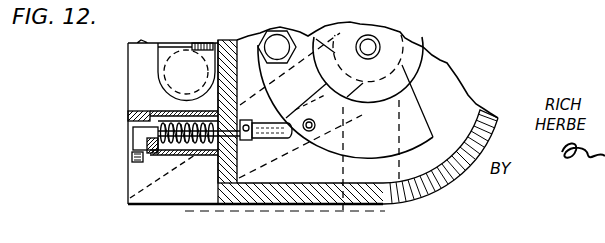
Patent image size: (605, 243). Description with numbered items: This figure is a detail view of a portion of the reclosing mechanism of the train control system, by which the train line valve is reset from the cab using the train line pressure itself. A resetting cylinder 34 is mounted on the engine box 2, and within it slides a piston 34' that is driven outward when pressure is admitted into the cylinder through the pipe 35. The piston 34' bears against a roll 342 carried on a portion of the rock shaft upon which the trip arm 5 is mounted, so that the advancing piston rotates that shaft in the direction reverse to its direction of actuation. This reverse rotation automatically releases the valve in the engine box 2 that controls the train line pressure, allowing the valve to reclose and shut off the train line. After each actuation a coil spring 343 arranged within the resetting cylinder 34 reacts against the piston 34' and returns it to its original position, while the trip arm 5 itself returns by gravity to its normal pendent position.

The engine box 2 is at (350, 96).
The trip arm 5 is at (428, 206).
The resetting cylinder 34 is at (175, 158).
The piston 34' is at (187, 156).
The roll 342 is at (315, 129).
The coil spring 343 is at (225, 140).
The pipe 35 is at (131, 164).